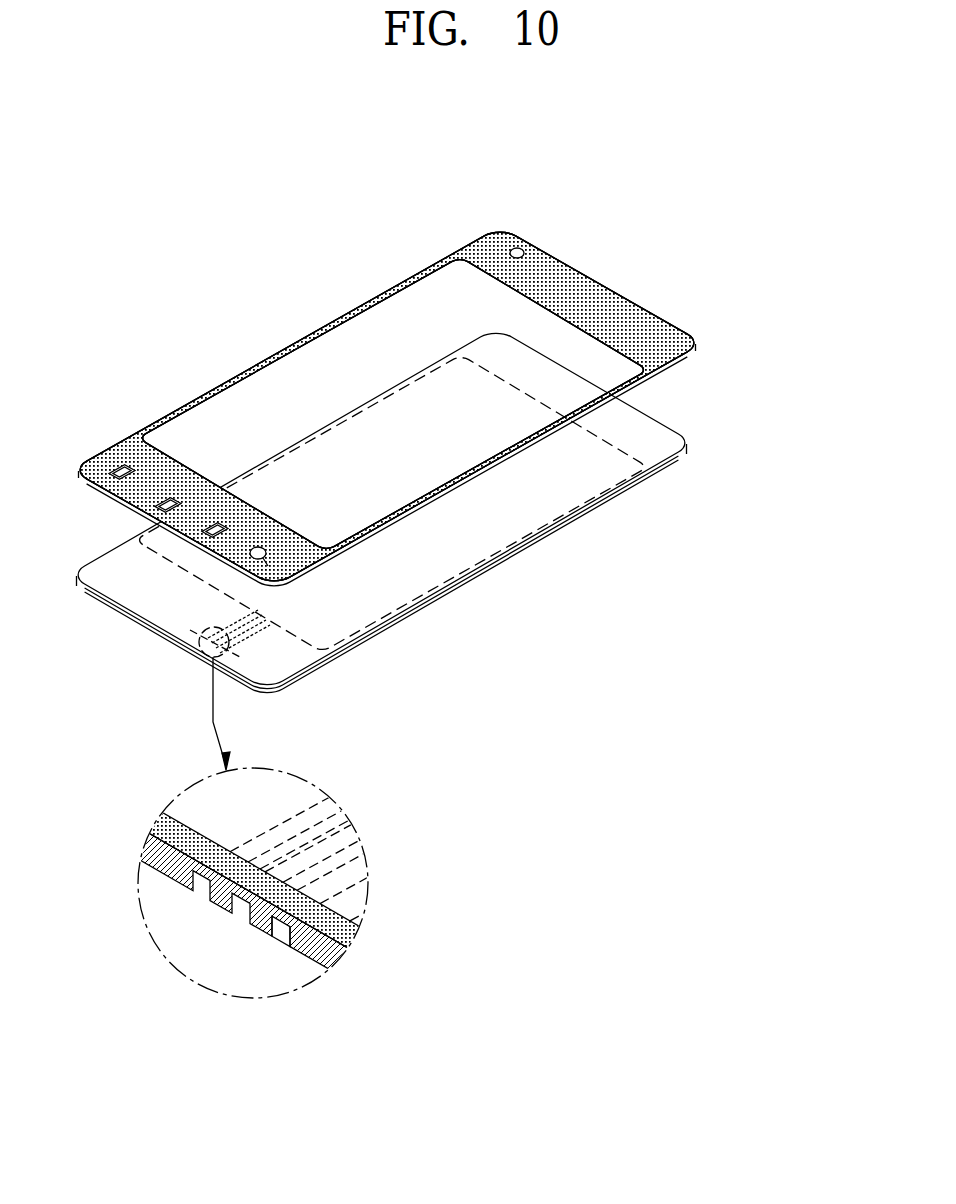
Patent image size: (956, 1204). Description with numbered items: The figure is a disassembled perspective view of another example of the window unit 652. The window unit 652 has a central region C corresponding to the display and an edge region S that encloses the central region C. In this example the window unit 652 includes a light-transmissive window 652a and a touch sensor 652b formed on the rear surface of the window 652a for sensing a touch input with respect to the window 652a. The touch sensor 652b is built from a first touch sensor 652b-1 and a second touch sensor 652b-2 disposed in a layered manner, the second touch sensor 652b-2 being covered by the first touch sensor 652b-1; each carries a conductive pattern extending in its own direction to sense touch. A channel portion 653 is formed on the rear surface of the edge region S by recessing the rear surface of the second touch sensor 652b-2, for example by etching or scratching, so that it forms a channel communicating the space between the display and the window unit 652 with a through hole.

The window unit 652 is at (786, 336).
The light-transmissive window 652a is at (435, 391).
The touch sensor 652b is at (694, 443).
The first touch sensor 652b-1 is at (353, 940).
The second touch sensor 652b-2 is at (332, 958).
The channel portion 653 is at (279, 933).
The edge region S is at (485, 243).
The central region C is at (355, 328).